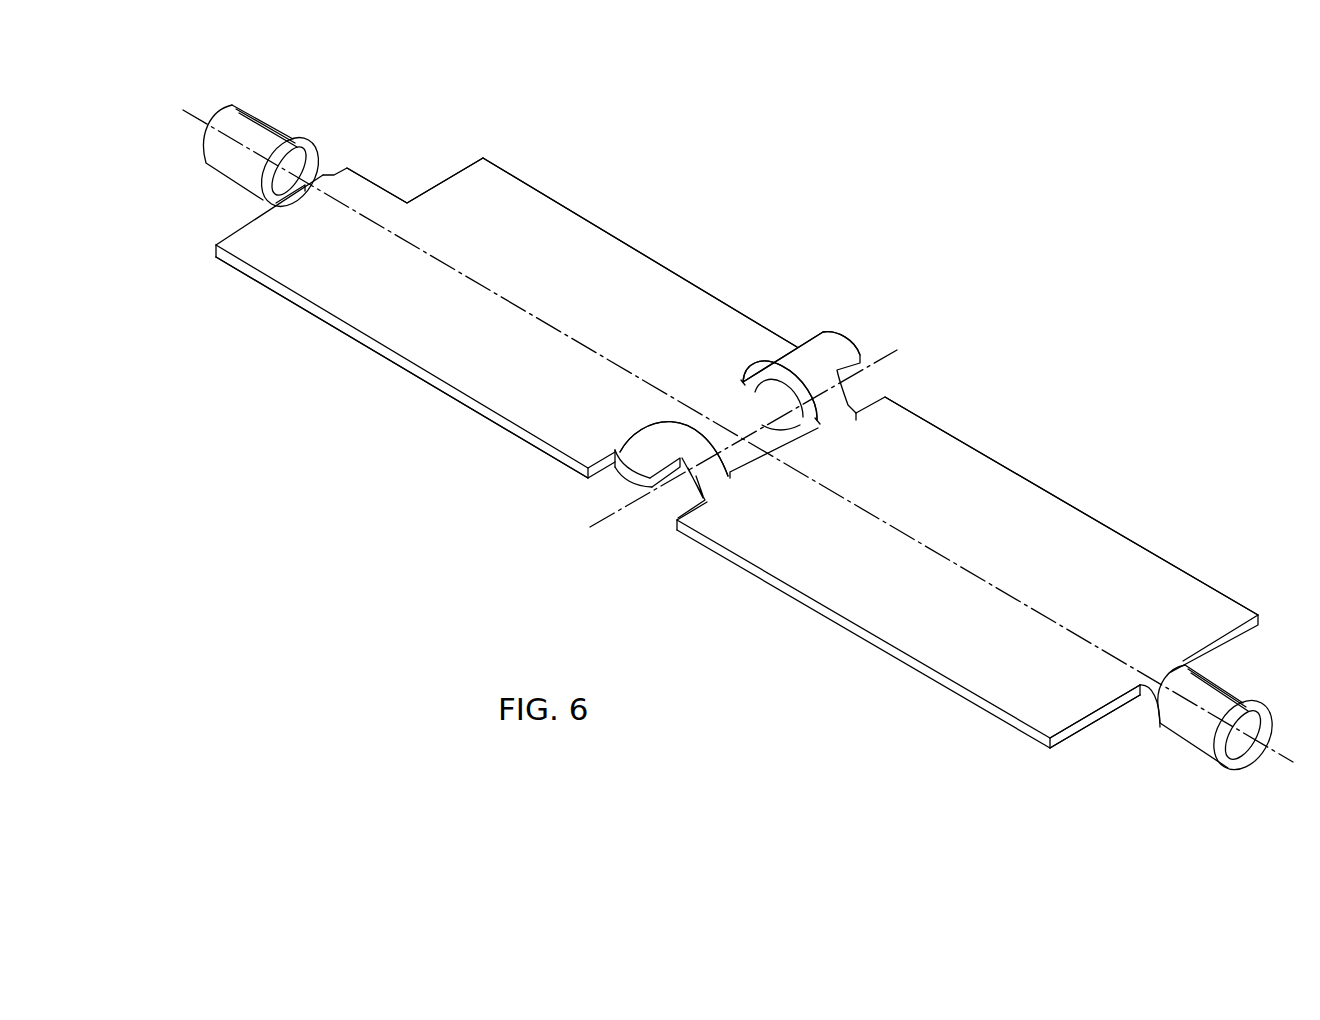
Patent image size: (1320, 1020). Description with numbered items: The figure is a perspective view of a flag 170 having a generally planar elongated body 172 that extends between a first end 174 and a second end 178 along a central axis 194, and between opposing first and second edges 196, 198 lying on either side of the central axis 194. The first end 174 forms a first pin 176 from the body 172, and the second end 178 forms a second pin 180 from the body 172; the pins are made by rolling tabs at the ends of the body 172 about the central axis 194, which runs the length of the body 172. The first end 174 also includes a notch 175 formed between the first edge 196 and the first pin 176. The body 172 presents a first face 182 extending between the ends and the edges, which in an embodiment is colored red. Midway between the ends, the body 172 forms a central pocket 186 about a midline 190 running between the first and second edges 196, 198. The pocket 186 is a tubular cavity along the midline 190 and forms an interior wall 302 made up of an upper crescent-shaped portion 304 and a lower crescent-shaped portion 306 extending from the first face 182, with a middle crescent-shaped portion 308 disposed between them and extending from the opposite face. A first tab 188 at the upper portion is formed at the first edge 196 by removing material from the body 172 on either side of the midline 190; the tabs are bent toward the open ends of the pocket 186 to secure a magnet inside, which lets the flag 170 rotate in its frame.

The flag 170 is at (1065, 412).
The body 172 is at (216, 243).
The first end 174 is at (224, 307).
The notch 175 is at (407, 158).
The first pin 176 is at (262, 110).
The second end 178 is at (992, 752).
The second pin 180 is at (1190, 733).
The first face 182 is at (467, 331).
The central pocket 186 is at (885, 376).
The first tab 188 is at (642, 448).
The midline 190 is at (605, 518).
The central axis 194 is at (422, 252).
The first edge 196 is at (1115, 528).
The second edge 198 is at (467, 407).
The interior wall 302 is at (737, 417).
The upper crescent-shaped portion 304 is at (802, 370).
The lower crescent-shaped portion 306 is at (712, 473).
The middle crescent-shaped portion 308 is at (771, 427).